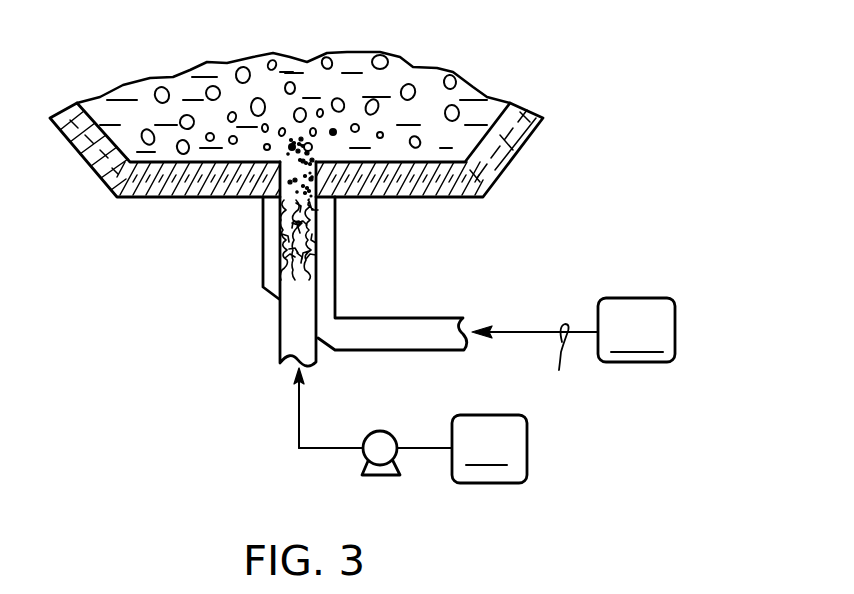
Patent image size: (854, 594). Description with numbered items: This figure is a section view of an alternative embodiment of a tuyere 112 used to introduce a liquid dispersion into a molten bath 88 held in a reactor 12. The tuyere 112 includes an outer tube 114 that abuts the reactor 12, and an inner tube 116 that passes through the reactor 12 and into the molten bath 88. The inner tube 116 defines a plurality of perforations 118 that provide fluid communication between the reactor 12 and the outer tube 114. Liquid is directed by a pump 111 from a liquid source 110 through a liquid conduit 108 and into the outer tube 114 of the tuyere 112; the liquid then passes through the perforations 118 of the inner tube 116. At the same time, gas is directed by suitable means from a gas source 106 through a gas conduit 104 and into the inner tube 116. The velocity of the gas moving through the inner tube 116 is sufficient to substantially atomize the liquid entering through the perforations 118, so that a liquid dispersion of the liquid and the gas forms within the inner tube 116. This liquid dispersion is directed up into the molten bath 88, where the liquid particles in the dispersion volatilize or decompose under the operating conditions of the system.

The molten bath 88 is at (175, 88).
The reactor 12 is at (507, 167).
The tuyere 112 is at (297, 251).
The outer tube 114 is at (335, 225).
The inner tube 116 is at (318, 287).
The perforations 118 is at (282, 238).
The gas source 106 is at (573, 330).
The gas conduit 104 is at (566, 366).
The liquid conduit 108 is at (294, 420).
The pump 111 is at (367, 431).
The liquid source 110 is at (489, 449).